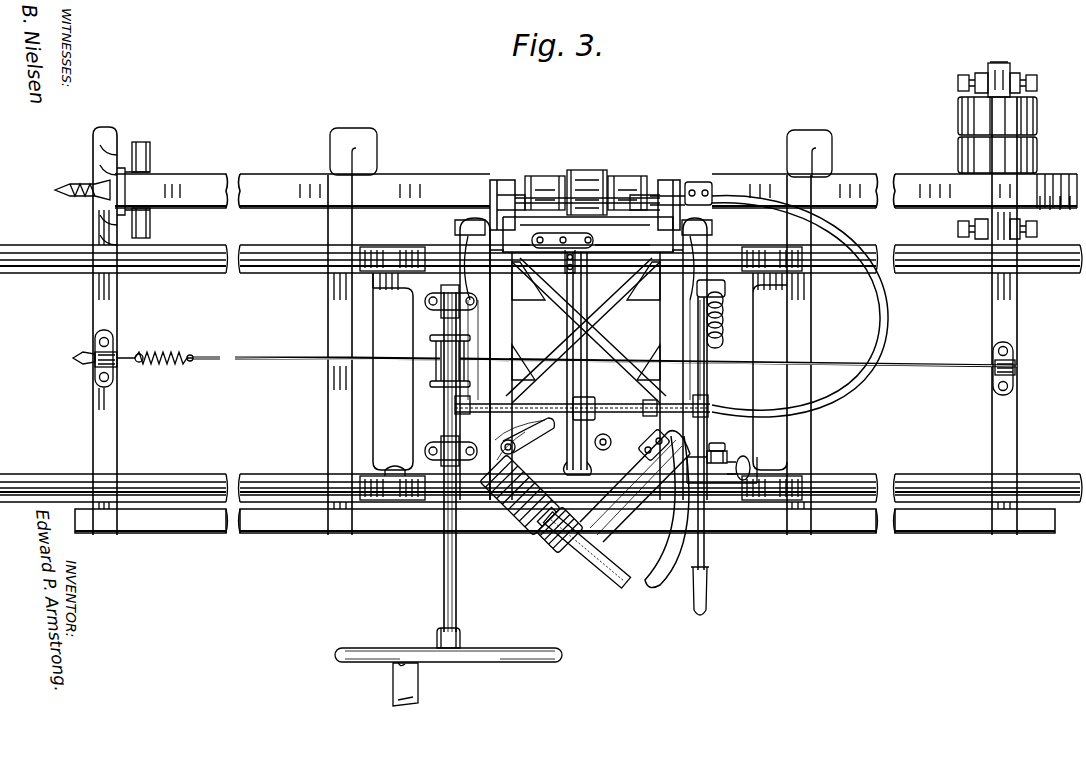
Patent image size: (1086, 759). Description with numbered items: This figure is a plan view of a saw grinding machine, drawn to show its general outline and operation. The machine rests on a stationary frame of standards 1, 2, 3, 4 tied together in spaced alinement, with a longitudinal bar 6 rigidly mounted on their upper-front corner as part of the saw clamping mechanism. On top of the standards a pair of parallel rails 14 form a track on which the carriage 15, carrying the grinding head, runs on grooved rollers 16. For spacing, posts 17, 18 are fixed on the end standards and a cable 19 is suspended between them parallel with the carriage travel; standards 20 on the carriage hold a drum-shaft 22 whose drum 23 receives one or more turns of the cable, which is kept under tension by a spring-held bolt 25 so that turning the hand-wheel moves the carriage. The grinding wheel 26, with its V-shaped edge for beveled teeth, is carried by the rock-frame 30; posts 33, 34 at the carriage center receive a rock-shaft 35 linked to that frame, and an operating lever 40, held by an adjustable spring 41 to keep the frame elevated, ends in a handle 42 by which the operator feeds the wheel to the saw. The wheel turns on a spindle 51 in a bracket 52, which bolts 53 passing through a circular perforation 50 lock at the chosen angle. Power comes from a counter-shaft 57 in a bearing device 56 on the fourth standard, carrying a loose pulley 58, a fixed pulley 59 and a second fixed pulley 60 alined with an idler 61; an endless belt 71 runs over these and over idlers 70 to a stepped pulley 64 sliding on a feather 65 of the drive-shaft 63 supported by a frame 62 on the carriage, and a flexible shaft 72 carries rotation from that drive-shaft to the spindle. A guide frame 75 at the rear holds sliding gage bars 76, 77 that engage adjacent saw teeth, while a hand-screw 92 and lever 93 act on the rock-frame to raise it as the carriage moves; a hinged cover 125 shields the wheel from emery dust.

The standard 1 is at (93, 425).
The standard 2 is at (332, 420).
The standard 3 is at (812, 440).
The standard 4 is at (1017, 442).
The longitudinal bar 6 is at (284, 526).
The parallel rails 14 is at (50, 275).
The carriage 15 is at (414, 400).
The grooved rollers 16 is at (396, 250).
The post 17 is at (115, 356).
The post 18 is at (1016, 366).
The cable 19 is at (270, 360).
The standards 20 is at (436, 294).
The drum-shaft 22 is at (444, 578).
The drum 23 is at (436, 356).
The spring-held bolt 25 is at (126, 363).
The grinding wheel 26 is at (612, 580).
The rock-frame 30 is at (512, 340).
The post 33 is at (650, 400).
The post 34 is at (466, 404).
The rock-shaft 35 is at (512, 404).
The operating lever 40 is at (705, 552).
The adjustable spring 41 is at (726, 330).
The handle 42 is at (708, 595).
The circular perforation 50 is at (652, 588).
The spindle 51 is at (553, 547).
The bracket 52 is at (578, 472).
The bolts 53 is at (501, 446).
The bearing device 56 is at (990, 76).
The counter-shaft 57 is at (1002, 63).
The loose pulley 58 is at (997, 116).
The fixed pulley 59 is at (997, 155).
The second fixed pulley 60 is at (1046, 177).
The idler 61 is at (158, 176).
The frame 62 is at (499, 184).
The drive-shaft 63 is at (640, 192).
The stepped pulley 64 is at (569, 170).
The feather 65 is at (660, 185).
The idlers 70 is at (534, 176).
The endless belt 71 is at (410, 178).
The flexible shaft 72 is at (878, 324).
The guide frame 75 is at (593, 240).
The gage bar 76 is at (560, 258).
The gage bar 77 is at (582, 311).
The hand-screw 92 is at (750, 462).
The lever 93 is at (735, 450).
The hinged cover 125 is at (525, 522).